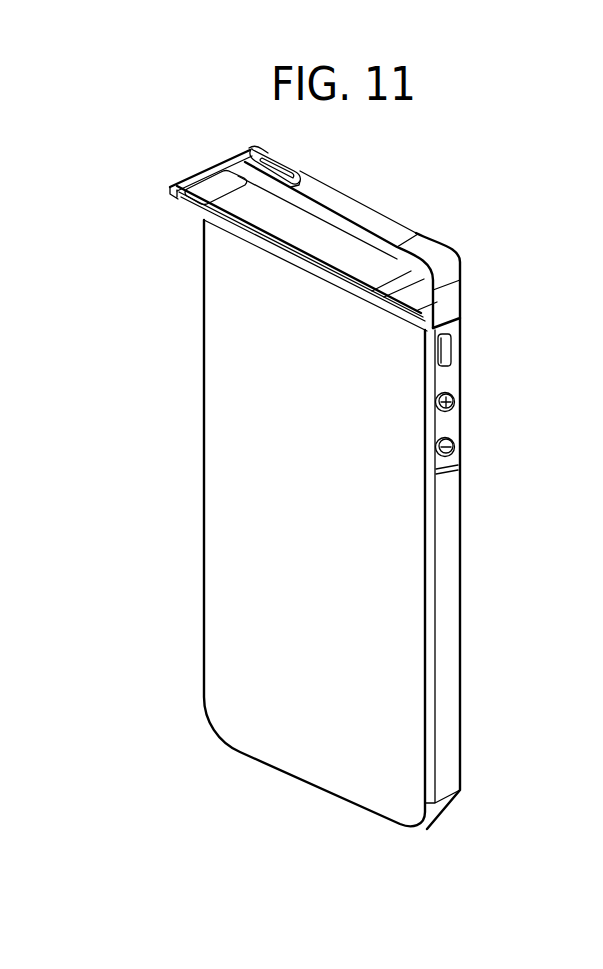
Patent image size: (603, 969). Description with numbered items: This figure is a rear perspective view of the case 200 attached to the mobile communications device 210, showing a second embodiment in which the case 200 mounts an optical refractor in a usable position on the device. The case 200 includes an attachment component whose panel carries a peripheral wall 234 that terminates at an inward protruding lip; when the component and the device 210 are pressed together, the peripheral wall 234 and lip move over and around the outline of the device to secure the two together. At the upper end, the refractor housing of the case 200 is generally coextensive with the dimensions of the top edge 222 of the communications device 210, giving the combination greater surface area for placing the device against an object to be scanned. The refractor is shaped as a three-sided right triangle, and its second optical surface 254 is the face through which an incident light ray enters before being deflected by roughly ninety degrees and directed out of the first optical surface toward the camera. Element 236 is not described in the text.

The case 200 is at (318, 515).
The mobile communications device 210 is at (456, 369).
The top edge 222 is at (285, 180).
The peripheral wall 234 is at (459, 460).
The front surface 236 is at (243, 537).
The second optical surface 254 is at (272, 196).